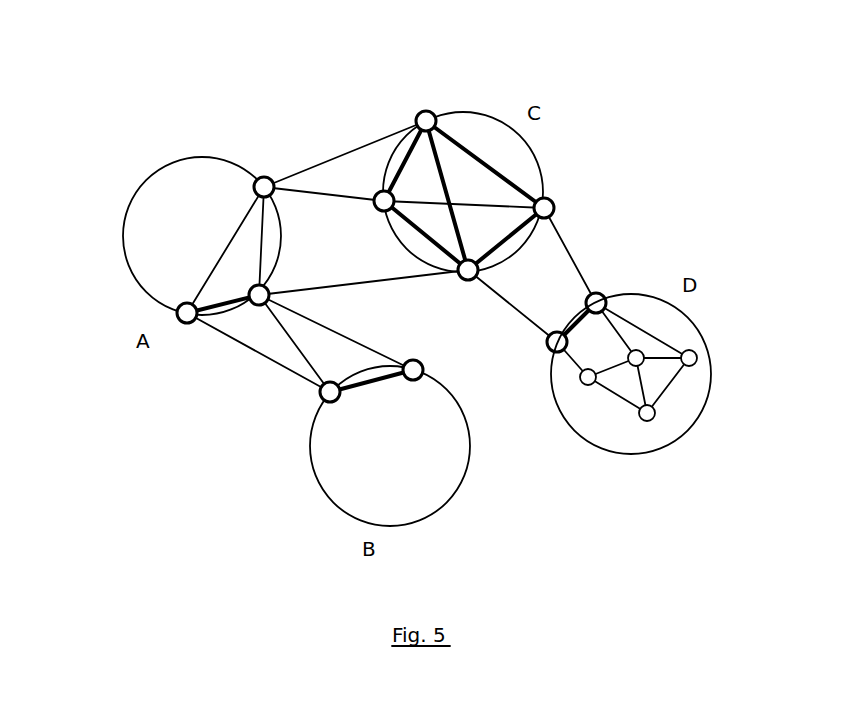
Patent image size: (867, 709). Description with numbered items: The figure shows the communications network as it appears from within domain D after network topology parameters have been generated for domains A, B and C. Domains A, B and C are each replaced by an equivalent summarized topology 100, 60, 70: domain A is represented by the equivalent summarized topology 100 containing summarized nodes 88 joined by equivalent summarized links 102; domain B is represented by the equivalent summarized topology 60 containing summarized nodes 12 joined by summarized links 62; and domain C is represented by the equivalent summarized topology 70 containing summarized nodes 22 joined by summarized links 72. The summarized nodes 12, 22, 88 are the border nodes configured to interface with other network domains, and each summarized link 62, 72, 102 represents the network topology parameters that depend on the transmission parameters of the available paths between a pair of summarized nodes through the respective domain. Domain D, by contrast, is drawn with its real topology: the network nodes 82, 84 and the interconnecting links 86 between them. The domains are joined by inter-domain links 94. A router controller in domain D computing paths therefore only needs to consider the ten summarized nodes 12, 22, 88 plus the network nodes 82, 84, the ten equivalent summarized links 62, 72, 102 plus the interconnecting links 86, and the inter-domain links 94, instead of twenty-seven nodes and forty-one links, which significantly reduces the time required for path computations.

The equivalent summarized topology 100 is at (230, 95).
The equivalent summarized links 102 is at (207, 278).
The summarized nodes 88 is at (264, 177).
The inter-domain links 94 is at (356, 145).
The summarized nodes 22 is at (423, 111).
The summarized links 72 is at (462, 145).
The equivalent summarized topology 70 is at (553, 144).
The summarized nodes 12 is at (320, 398).
The summarized links 62 is at (375, 388).
The equivalent summarized topology 60 is at (296, 479).
The network nodes 82 is at (603, 295).
The network nodes 84 is at (697, 356).
The interconnecting links 86 is at (663, 387).